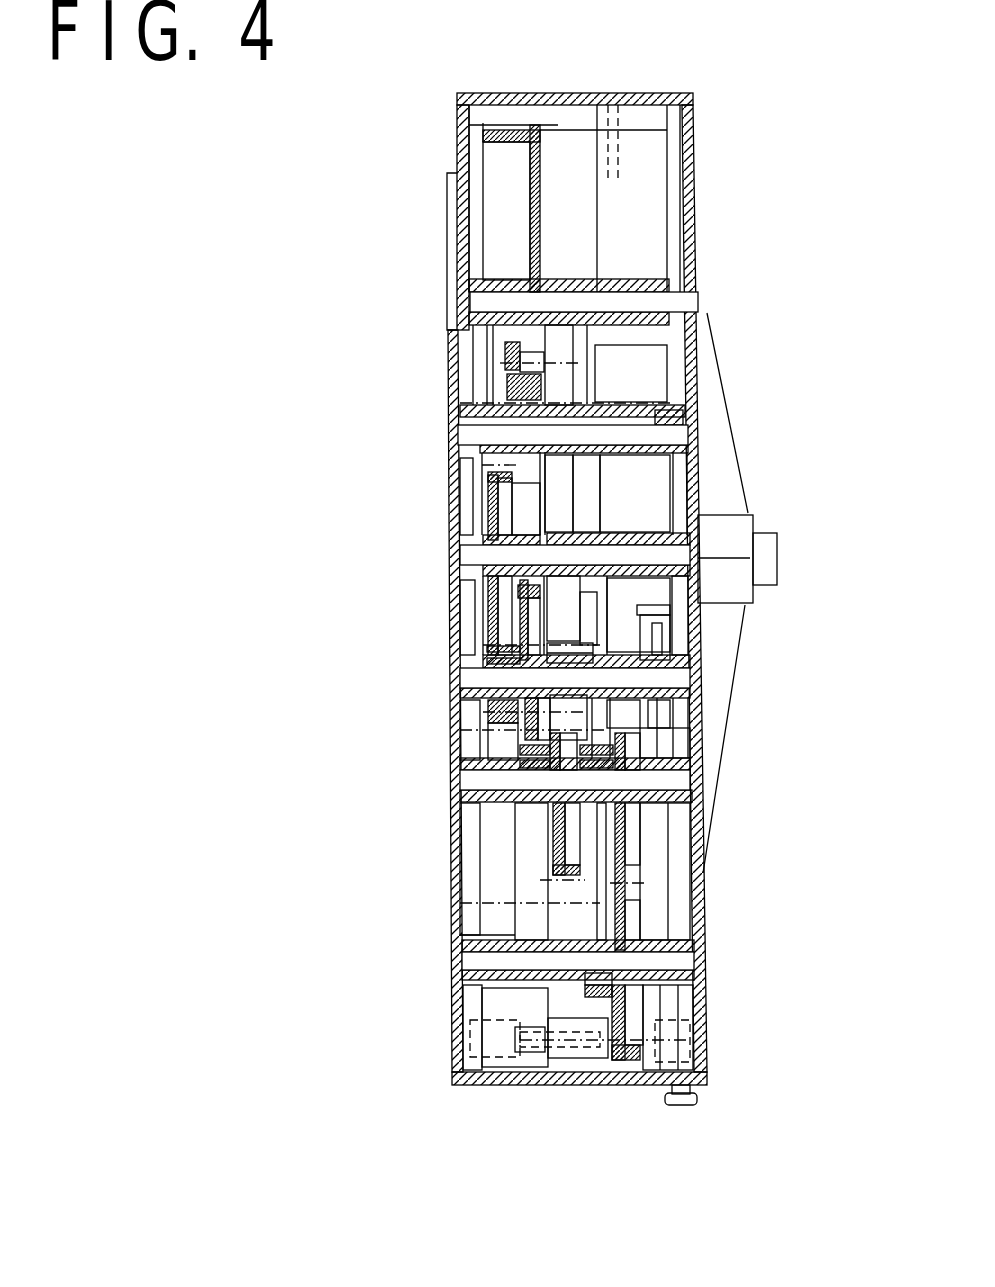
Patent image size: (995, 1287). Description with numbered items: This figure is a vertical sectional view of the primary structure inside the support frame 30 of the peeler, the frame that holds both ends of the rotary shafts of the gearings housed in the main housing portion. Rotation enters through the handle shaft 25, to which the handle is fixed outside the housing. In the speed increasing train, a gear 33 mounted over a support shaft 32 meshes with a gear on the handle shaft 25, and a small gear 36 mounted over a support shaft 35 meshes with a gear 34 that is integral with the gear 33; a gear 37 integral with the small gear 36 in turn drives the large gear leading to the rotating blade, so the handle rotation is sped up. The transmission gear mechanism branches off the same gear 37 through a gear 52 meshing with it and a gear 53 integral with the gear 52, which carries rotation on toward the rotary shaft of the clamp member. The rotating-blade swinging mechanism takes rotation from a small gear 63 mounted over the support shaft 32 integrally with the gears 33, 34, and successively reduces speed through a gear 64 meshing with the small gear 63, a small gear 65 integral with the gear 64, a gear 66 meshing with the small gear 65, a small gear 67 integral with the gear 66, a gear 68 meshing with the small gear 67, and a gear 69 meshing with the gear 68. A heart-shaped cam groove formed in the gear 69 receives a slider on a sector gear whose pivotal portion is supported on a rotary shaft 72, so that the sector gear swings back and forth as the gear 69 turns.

The handle shaft 25 is at (775, 548).
The support frame 30 is at (693, 152).
The support shaft 32 is at (468, 680).
The gear 33 is at (662, 640).
The gear 34 is at (607, 597).
The support shaft 35 is at (480, 779).
The small gear 36 is at (600, 818).
The gear 37 is at (625, 885).
The gear 52 is at (628, 1060).
The gear 53 is at (600, 993).
The small gear 63 is at (570, 645).
The gear 64 is at (560, 890).
The small gear 65 is at (527, 823).
The gear 66 is at (510, 628).
The small gear 67 is at (500, 712).
The gear 68 is at (488, 502).
The gear 69 is at (488, 157).
The rotary shaft 72 is at (465, 435).